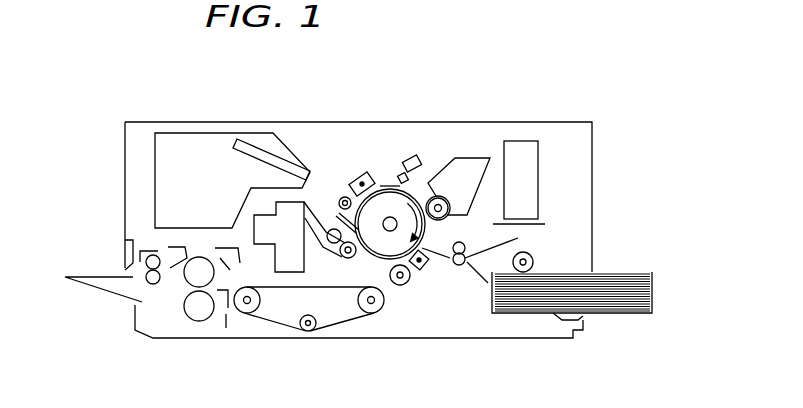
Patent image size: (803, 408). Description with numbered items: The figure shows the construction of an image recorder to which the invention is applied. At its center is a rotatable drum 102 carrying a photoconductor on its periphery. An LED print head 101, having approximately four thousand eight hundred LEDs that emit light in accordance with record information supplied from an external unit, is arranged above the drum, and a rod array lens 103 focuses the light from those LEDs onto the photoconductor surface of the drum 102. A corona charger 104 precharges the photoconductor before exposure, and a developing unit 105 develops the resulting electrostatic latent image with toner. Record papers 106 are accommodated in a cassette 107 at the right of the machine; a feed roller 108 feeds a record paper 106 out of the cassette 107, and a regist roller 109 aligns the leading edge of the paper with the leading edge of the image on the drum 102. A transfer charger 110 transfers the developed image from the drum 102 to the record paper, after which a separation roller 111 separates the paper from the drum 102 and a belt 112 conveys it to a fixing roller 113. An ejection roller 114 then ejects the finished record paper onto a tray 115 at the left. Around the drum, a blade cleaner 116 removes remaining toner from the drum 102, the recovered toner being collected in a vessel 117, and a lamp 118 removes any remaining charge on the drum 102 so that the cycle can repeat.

The LED print head 101 is at (420, 154).
The drum 102 is at (388, 188).
The rod array lens 103 is at (407, 155).
The corona charger 104 is at (356, 177).
The developing unit 105 is at (475, 158).
The record papers 106 is at (625, 283).
The cassette 107 is at (652, 294).
The feed roller 108 is at (534, 259).
The regist roller 109 is at (459, 266).
The transfer charger 110 is at (424, 270).
The separation roller 111 is at (403, 286).
The belt 112 is at (350, 320).
The fixing roller 113 is at (198, 322).
The ejection roller 114 is at (152, 285).
The tray 115 is at (105, 290).
The blade cleaner 116 is at (337, 215).
The vessel 117 is at (287, 273).
The lamp 118 is at (342, 198).